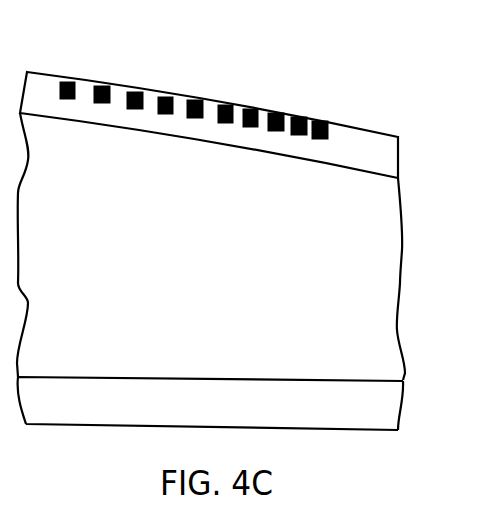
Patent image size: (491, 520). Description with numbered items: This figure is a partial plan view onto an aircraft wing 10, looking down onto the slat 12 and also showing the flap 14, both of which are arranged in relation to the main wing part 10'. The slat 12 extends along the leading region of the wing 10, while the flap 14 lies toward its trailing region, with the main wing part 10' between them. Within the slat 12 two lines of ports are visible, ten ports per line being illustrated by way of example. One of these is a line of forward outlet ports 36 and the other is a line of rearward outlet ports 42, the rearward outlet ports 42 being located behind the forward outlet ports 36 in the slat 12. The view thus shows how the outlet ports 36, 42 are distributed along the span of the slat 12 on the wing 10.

The aircraft wing 10 is at (239, 220).
The main wing part 10' is at (238, 246).
The slat 12 is at (390, 158).
The flap 14 is at (390, 405).
The forward outlet ports 36 is at (314, 119).
The rearward outlet ports 42 is at (328, 137).